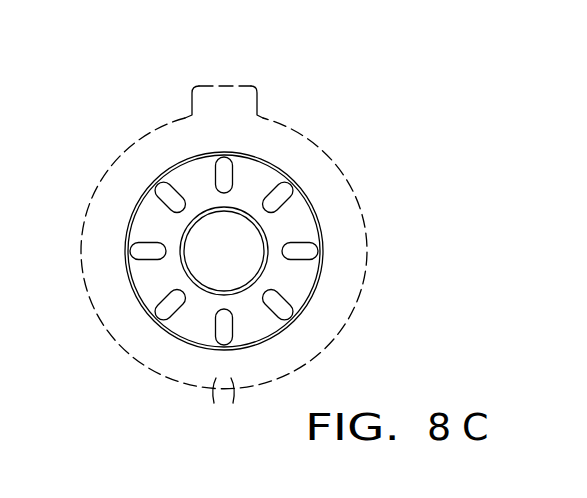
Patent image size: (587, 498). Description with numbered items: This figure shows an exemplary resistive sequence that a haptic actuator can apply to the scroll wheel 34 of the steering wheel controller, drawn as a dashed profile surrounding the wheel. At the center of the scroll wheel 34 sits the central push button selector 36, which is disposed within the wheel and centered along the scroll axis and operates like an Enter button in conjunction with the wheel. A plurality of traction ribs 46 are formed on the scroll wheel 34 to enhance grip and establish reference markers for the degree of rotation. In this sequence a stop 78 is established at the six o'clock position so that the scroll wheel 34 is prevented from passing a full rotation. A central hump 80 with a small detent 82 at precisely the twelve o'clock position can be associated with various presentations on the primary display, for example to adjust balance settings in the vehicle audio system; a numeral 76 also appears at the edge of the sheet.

The scroll wheel 34 is at (128, 289).
The central push button selector 36 is at (208, 262).
The traction ribs 46 is at (272, 186).
The housing 76 is at (333, 4).
The stop 78 is at (219, 392).
The central hump 80 is at (193, 91).
The detent 82 is at (222, 97).